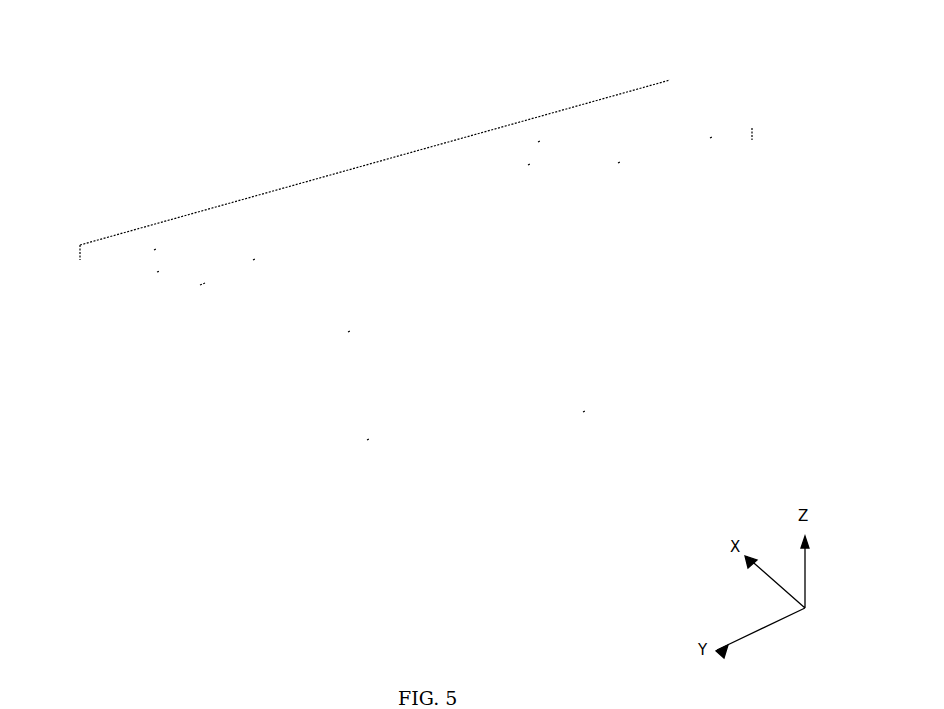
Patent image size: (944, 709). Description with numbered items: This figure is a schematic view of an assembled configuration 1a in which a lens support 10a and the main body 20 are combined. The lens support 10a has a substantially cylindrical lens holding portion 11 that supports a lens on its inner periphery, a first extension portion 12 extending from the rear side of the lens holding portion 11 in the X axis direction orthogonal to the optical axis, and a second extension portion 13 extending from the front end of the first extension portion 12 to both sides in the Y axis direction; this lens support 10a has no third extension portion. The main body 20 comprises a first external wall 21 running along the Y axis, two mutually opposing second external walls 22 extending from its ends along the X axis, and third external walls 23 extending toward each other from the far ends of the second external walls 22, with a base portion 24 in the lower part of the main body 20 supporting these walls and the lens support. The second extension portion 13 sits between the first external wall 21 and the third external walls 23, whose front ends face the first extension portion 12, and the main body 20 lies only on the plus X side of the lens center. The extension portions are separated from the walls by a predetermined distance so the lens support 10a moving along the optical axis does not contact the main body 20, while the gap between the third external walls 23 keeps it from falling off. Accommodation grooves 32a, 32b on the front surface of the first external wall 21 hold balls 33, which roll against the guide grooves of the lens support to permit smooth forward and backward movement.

The pressing device 1a is at (386, 41).
The lens support 10a is at (800, 287).
The lens holding portion 11 is at (583, 412).
The first extension portion 12 is at (348, 332).
The second extension portion 13 is at (253, 260).
The main body 20 is at (185, 190).
The first external wall 21 is at (637, 98).
The second external walls 22 is at (120, 267).
The third external walls 23 is at (200, 285).
The base portion 24 is at (367, 440).
The accommodation groove 32a is at (154, 250).
The accommodation groove 32b is at (538, 142).
The balls 33 is at (157, 272).